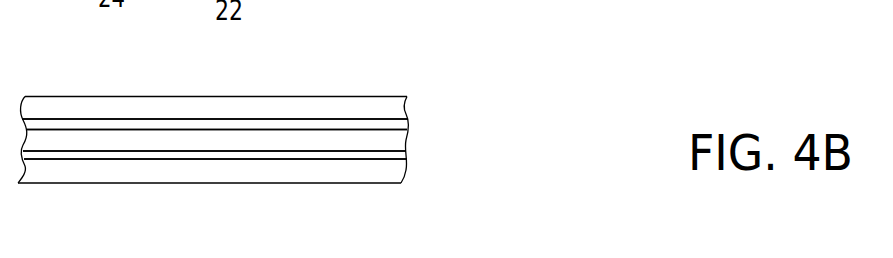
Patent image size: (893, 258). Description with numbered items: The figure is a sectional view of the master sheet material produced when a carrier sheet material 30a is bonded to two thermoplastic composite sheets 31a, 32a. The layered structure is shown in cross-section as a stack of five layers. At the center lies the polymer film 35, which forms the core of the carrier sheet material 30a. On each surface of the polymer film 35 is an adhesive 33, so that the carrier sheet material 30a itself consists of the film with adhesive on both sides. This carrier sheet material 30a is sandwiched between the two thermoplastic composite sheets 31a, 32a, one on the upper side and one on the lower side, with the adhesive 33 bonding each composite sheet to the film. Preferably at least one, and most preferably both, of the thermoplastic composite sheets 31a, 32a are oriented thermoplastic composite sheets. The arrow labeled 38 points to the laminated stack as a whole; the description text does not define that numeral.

The carrier sheet material 30a is at (560, 97).
The thermoplastic composite sheet 31a is at (407, 106).
The thermoplastic composite sheet 32a is at (406, 172).
The adhesive 33 is at (408, 121).
The polymer film 35 is at (407, 138).
The film stack 38 is at (311, 73).